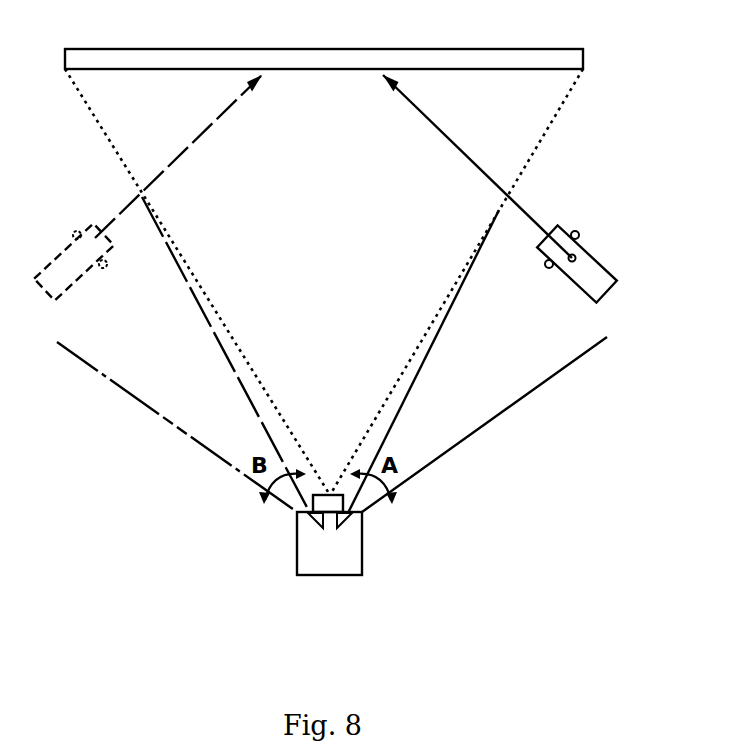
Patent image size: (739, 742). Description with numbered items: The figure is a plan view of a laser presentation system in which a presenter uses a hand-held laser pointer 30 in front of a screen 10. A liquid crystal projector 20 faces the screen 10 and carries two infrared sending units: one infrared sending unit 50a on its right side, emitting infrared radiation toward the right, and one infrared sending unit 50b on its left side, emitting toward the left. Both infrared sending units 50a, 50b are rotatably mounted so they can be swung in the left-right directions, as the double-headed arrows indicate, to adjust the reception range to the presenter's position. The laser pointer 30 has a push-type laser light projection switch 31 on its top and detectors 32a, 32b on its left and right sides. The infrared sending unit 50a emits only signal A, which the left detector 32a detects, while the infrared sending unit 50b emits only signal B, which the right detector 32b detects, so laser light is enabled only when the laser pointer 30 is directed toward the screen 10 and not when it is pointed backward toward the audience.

The screen 10 is at (313, 69).
The liquid crystal projector 20 is at (363, 555).
The laser pointer 30 is at (618, 277).
The laser light projection switch 31 is at (578, 250).
The detector 32a is at (548, 268).
The detector 32b is at (579, 232).
The infrared sending unit 50a is at (347, 530).
The infrared sending unit 50b is at (322, 527).